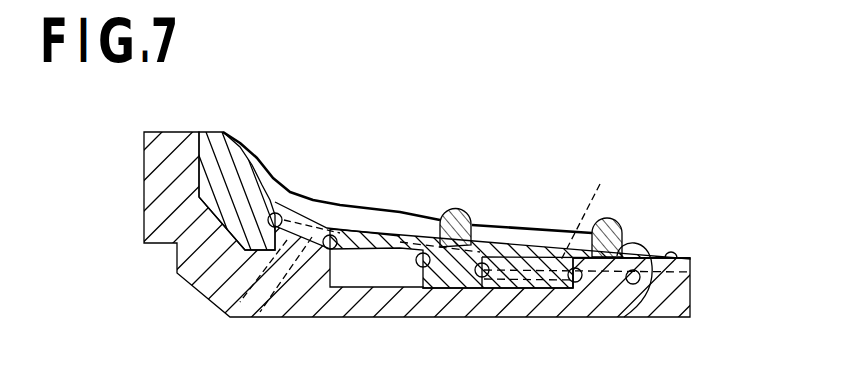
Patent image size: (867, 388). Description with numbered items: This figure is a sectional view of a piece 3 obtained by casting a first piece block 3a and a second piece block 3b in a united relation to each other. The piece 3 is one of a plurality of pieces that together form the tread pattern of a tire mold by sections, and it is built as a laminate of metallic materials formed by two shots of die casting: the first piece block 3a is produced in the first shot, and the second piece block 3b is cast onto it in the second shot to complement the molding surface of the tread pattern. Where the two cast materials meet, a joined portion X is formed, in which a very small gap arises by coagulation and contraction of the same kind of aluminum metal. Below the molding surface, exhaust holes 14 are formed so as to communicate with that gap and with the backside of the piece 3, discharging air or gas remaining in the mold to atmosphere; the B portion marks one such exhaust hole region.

The piece 3 is at (403, 206).
The first piece block 3a is at (373, 303).
The second piece block 3b is at (362, 208).
The exhaust hole 14 is at (270, 213).
The B portion B is at (648, 243).
The joined portion X is at (325, 235).